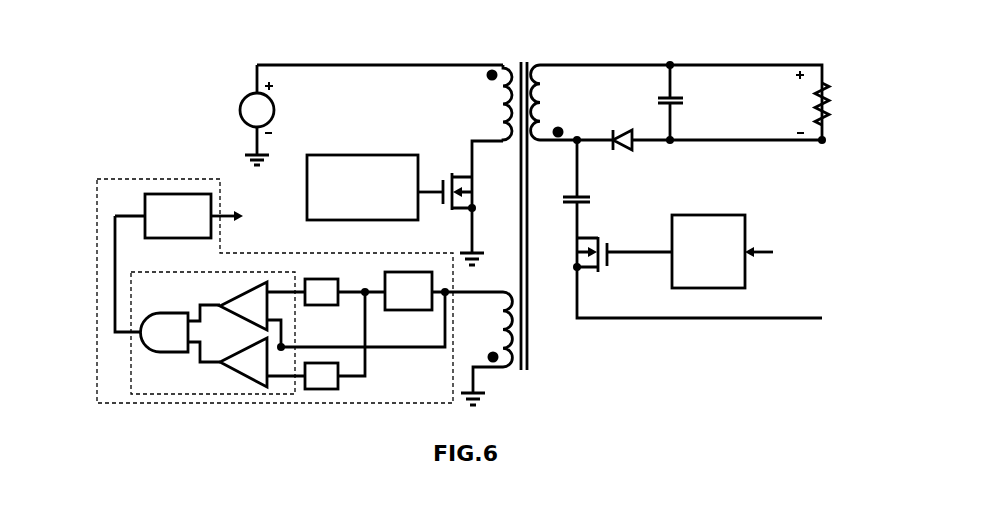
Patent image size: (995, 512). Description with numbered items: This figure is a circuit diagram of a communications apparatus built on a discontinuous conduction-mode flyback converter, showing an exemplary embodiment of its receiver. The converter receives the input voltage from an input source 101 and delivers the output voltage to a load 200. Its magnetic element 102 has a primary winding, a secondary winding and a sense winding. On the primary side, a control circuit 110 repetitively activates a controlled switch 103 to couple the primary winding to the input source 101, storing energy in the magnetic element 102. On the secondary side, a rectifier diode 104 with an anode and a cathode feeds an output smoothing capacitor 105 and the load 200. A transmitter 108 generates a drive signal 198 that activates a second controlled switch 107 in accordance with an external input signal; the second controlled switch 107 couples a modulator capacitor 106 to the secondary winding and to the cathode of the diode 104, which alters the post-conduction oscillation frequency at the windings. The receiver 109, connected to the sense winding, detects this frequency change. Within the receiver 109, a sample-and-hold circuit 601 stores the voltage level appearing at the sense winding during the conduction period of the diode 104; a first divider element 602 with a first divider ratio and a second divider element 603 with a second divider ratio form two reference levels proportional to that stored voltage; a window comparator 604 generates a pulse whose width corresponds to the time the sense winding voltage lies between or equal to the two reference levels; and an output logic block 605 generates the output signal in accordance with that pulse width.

The input source 101 is at (282, 112).
The magnetic element 102 is at (522, 55).
The controlled switch 103 is at (455, 172).
The rectifier diode 104 is at (625, 128).
The output smoothing capacitor 105 is at (690, 100).
The modulator capacitor 106 is at (595, 198).
The second controlled switch 107 is at (568, 253).
The transmitter 108 is at (707, 212).
The receiver 109 is at (90, 190).
The control circuit 110 is at (358, 151).
The drive signal 198 is at (618, 247).
The load 200 is at (832, 80).
The sample-and-hold circuit 601 is at (417, 270).
The first divider element 602 is at (322, 275).
The second divider element 603 is at (318, 393).
The window comparator 604 is at (222, 394).
The output logic block 605 is at (175, 190).